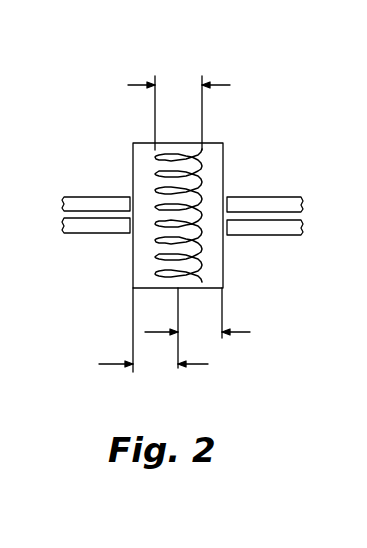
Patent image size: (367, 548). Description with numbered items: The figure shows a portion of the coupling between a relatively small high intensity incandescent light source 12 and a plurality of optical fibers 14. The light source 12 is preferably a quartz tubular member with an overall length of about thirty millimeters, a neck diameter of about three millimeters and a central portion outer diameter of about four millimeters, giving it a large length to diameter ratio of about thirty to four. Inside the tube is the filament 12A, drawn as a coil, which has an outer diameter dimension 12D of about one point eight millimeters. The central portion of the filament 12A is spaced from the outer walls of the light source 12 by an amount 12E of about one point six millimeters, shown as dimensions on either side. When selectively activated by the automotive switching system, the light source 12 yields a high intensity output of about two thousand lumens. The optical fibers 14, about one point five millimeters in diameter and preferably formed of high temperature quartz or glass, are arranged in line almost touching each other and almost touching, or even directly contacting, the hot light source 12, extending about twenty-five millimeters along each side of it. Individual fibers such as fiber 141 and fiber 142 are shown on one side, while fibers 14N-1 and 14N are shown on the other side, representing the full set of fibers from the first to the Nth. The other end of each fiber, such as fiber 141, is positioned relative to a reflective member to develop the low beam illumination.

The high intensity incandescent light source 12 is at (190, 227).
The filament 12A is at (200, 174).
The outer diameter dimension 12D is at (196, 112).
The spacing amount 12E is at (190, 334).
The optical fibers 14 is at (189, 217).
The optical fiber 142 is at (70, 197).
The optical fiber 141 is at (80, 233).
The optical fiber 14N-1 is at (300, 197).
The optical fiber 14N is at (295, 235).